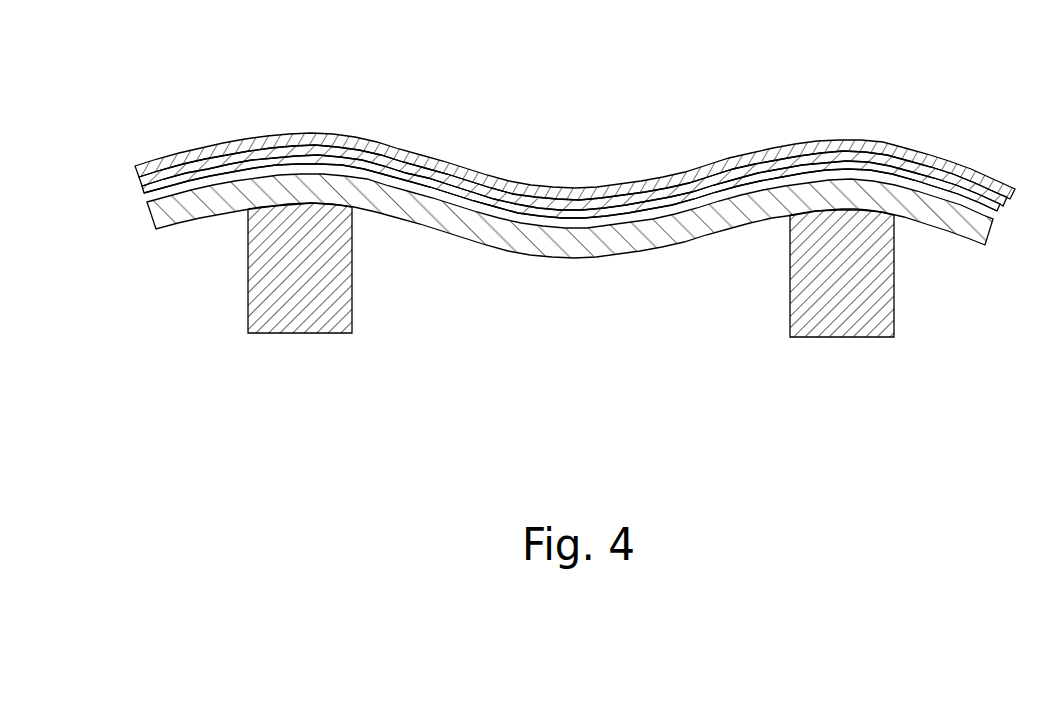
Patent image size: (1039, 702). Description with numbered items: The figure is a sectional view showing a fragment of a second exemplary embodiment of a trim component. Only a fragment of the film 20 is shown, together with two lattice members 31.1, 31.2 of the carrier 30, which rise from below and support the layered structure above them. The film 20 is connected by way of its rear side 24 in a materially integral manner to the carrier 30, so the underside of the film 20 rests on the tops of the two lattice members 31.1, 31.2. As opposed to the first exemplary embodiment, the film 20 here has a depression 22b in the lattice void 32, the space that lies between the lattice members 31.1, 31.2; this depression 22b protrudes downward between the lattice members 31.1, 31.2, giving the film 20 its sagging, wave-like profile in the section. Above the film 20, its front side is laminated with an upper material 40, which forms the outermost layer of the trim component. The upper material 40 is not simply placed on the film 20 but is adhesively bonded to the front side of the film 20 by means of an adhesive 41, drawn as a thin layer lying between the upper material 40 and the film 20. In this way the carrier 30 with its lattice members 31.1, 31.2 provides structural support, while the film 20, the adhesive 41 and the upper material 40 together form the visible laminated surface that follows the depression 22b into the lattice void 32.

The upper material 40 is at (383, 146).
The adhesive 41 is at (478, 198).
The lattice void 32 is at (570, 220).
The film 20 is at (592, 243).
The rear side 24 is at (397, 223).
The depression 22b is at (673, 242).
The lattice member 31.1 is at (263, 268).
The lattice member 31.2 is at (870, 270).
The carrier 30 is at (298, 336).